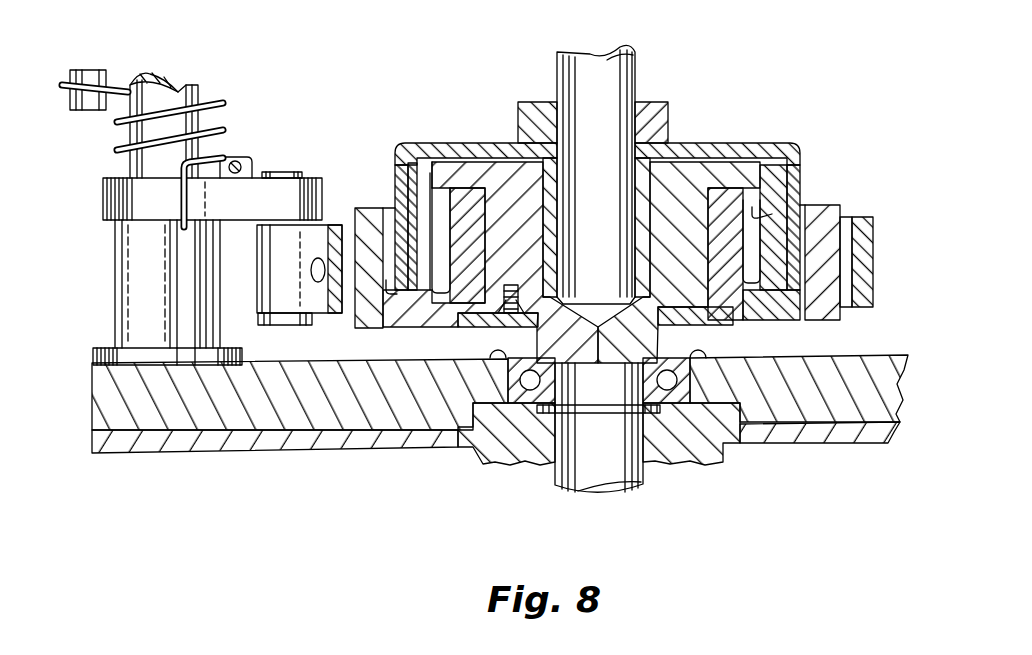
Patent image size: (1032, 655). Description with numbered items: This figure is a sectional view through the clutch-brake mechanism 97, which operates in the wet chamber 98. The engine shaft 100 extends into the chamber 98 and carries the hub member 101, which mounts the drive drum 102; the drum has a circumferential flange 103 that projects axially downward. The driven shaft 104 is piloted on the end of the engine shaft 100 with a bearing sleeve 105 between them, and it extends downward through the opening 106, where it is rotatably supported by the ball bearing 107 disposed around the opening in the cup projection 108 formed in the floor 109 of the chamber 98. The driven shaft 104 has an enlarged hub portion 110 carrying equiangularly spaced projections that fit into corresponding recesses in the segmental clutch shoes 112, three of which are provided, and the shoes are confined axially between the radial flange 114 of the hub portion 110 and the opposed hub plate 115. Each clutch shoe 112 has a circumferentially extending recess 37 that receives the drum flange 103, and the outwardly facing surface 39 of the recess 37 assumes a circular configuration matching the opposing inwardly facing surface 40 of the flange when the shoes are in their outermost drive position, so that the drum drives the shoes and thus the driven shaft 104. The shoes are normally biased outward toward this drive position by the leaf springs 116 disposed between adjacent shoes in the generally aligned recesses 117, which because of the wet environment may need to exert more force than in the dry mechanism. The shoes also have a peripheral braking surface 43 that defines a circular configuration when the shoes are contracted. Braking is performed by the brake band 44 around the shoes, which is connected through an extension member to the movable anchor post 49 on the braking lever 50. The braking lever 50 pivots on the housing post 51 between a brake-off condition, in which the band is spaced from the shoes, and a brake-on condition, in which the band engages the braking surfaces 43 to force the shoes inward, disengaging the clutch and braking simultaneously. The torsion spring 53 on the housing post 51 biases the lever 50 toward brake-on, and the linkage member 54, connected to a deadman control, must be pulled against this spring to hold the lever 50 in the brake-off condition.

The circumferentially extending recess 37 is at (388, 270).
The outwardly facing clutch surface 39 is at (416, 178).
The inwardly facing surface 40 is at (407, 193).
The peripheral braking surface 43 is at (356, 208).
The brake band 44 is at (315, 305).
The movable anchor post 49 is at (274, 172).
The braking lever 50 is at (234, 205).
The housing post 51 is at (175, 88).
The torsion spring 53 is at (220, 103).
The linkage member 54 is at (238, 160).
The clutch-brake mechanism 97 is at (810, 88).
The chamber 98 is at (807, 352).
The engine shaft 100 is at (637, 68).
The hub member 101 is at (668, 108).
The drive drum 102 is at (450, 143).
The circumferential flange 103 is at (398, 175).
The driven shaft 104 is at (592, 473).
The bearing sleeve 105 is at (650, 170).
The opening 106 is at (538, 430).
The ball bearing 107 is at (528, 390).
The cup projection 108 is at (522, 442).
The floor 109 is at (787, 385).
The enlarged hub portion 110 is at (667, 280).
The segmental clutch shoes 112 is at (420, 310).
The radial flange 114 is at (737, 190).
The hub plate 115 is at (725, 305).
The leaf springs 116 is at (441, 290).
The recesses 117 is at (512, 308).